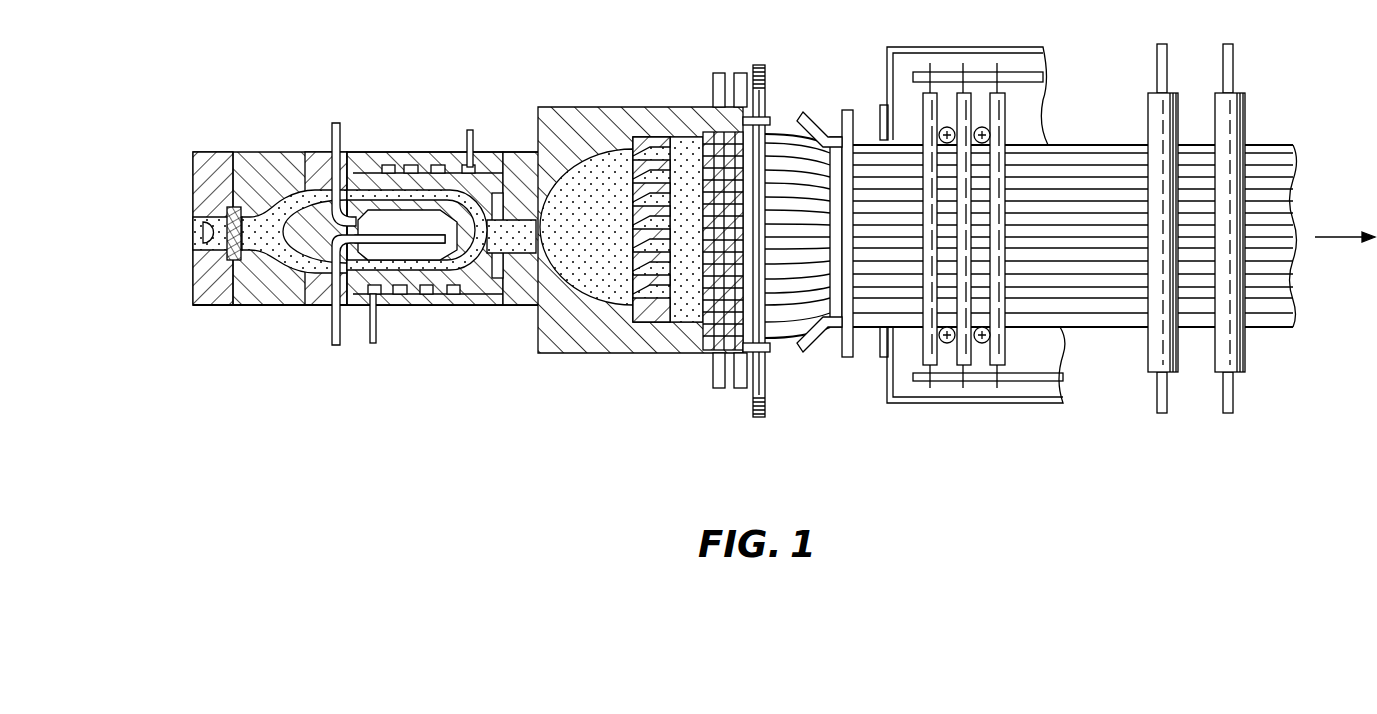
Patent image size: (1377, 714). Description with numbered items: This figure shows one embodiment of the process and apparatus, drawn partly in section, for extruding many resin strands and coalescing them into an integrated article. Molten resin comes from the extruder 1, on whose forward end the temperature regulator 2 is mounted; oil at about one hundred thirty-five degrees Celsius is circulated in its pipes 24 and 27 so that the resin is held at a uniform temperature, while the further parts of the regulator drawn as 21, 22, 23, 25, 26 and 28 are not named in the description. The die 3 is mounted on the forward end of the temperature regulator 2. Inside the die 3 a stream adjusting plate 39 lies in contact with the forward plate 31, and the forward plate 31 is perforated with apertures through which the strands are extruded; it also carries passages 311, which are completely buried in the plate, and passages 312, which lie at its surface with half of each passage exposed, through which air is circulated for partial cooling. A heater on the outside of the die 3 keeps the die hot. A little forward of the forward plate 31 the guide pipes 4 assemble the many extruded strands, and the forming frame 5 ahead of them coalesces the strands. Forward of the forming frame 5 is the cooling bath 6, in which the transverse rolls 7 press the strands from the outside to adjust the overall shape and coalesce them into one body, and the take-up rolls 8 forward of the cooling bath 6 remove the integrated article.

The extruder 1 is at (210, 308).
The temperature regulator 2 is at (398, 312).
The die body 21 is at (445, 165).
The mandrel cavity 22 is at (455, 262).
The annular flow channel 23 is at (400, 188).
The pipe 24 is at (331, 336).
The upper feed pipe 25 is at (331, 127).
The heater elements 26 is at (467, 168).
The pipe 27 is at (475, 135).
The lower pin 28 is at (372, 343).
The die 3 is at (648, 360).
The forward plate 31 is at (700, 325).
The passage 311 is at (718, 355).
The passage 312 is at (739, 360).
The stream adjusting plate 39 is at (645, 215).
The guide pipe 4 is at (762, 407).
The forming frame 5 is at (845, 345).
The cooling bath 6 is at (1003, 388).
The transverse roll 7 is at (963, 355).
The take-up roll 8 is at (1150, 360).